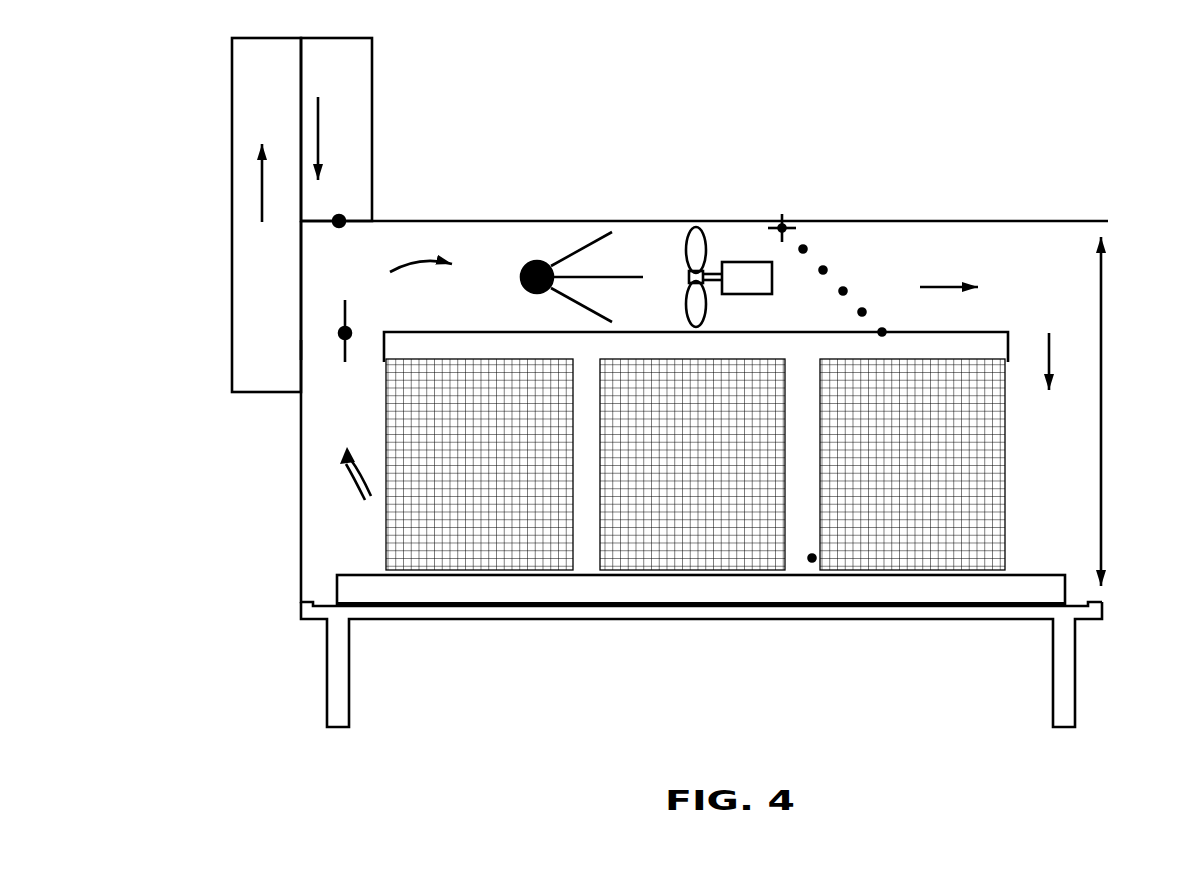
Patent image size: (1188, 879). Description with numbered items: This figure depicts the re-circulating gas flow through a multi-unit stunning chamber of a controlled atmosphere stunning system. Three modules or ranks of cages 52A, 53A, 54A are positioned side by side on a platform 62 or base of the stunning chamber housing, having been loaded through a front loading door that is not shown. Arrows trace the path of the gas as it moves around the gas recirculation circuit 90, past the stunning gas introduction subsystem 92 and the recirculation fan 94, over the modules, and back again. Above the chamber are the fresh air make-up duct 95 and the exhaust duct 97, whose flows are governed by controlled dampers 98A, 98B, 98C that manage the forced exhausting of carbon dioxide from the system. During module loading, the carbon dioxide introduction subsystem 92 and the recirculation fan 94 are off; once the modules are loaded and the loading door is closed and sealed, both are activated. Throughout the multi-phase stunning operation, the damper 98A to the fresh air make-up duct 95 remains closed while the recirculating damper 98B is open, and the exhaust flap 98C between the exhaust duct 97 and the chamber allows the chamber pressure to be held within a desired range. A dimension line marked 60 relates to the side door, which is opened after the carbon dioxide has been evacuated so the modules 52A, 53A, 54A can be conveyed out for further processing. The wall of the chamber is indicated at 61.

The gas recirculation circuit 90 is at (654, 172).
The stunning gas introduction subsystem 92 is at (522, 255).
The recirculation fan 94 is at (742, 262).
The fresh air make-up duct 95 is at (330, 38).
The exhaust duct 97 is at (232, 145).
The damper 98A is at (358, 221).
The recirculating damper 98B is at (345, 363).
The exhaust flap 98C is at (301, 350).
The side door 60 is at (1101, 395).
The chamber wall 61 is at (285, 560).
The platform 62 is at (1057, 573).
The module 52A is at (467, 547).
The module 53A is at (710, 547).
The module 54A is at (930, 547).